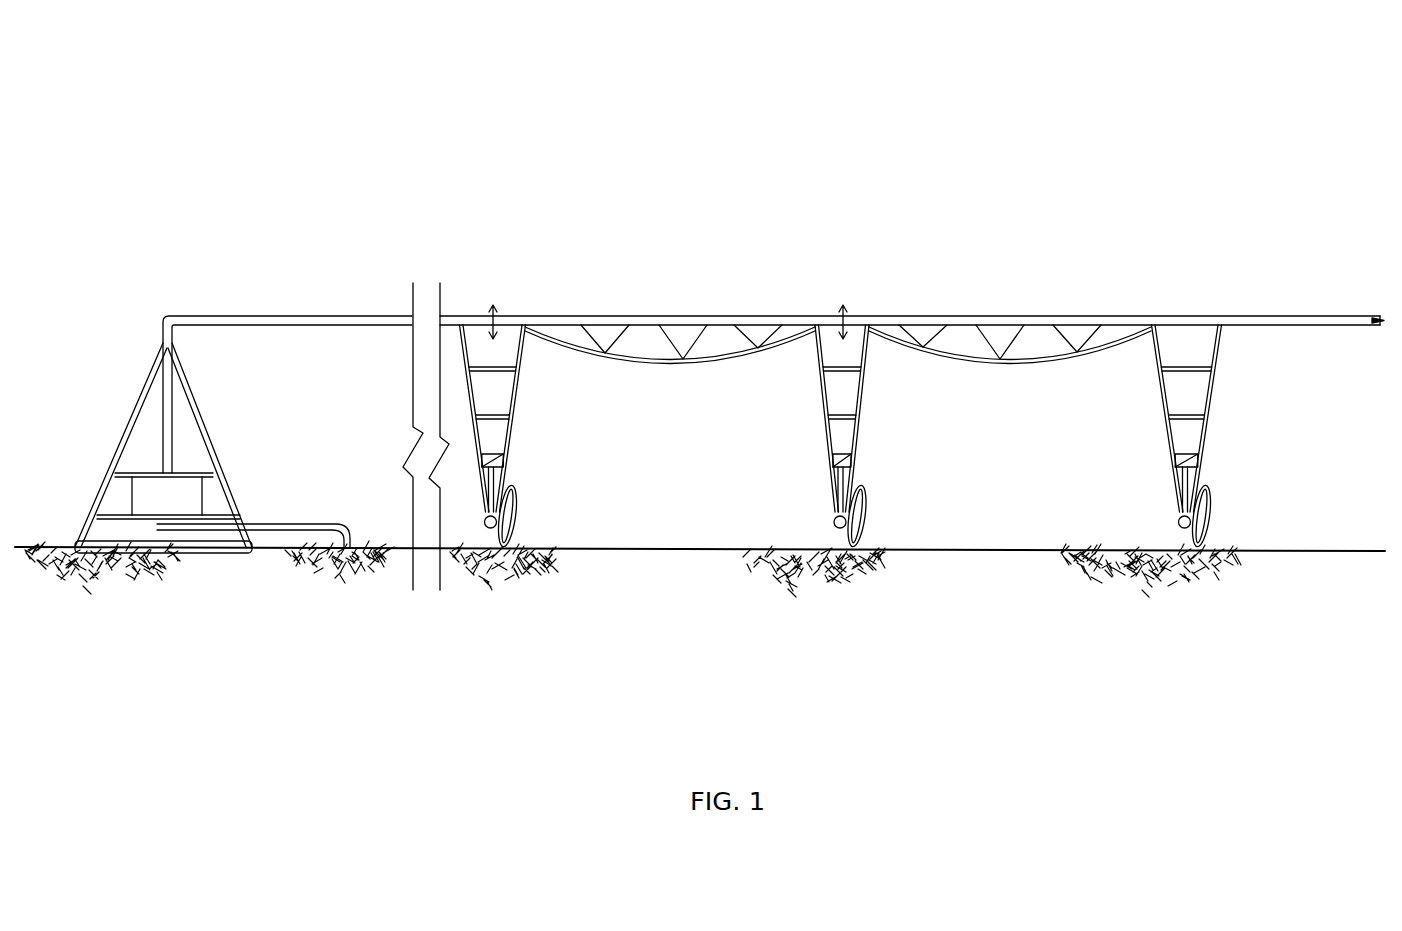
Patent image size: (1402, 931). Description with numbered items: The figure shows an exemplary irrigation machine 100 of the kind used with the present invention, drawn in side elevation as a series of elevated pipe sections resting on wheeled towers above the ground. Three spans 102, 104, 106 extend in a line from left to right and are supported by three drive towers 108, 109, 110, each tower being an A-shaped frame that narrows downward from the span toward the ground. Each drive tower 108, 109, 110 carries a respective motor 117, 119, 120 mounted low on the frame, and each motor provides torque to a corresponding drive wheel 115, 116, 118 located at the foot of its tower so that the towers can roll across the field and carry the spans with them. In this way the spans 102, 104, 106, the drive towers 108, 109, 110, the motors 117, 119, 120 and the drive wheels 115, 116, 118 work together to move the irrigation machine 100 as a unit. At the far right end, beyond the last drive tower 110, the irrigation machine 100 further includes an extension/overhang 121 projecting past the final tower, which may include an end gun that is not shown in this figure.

The irrigation machine 100 is at (777, 140).
The span 102 is at (230, 320).
The span 104 is at (633, 316).
The span 106 is at (993, 316).
The drive tower 108 is at (520, 403).
The drive tower 109 is at (867, 405).
The drive tower 110 is at (1212, 418).
The drive wheel 115 is at (520, 518).
The drive wheel 116 is at (866, 518).
The motor 117 is at (507, 458).
The drive wheel 118 is at (1210, 520).
The motor 119 is at (853, 460).
The motor 120 is at (1197, 462).
The extension/overhang 121 is at (1358, 317).